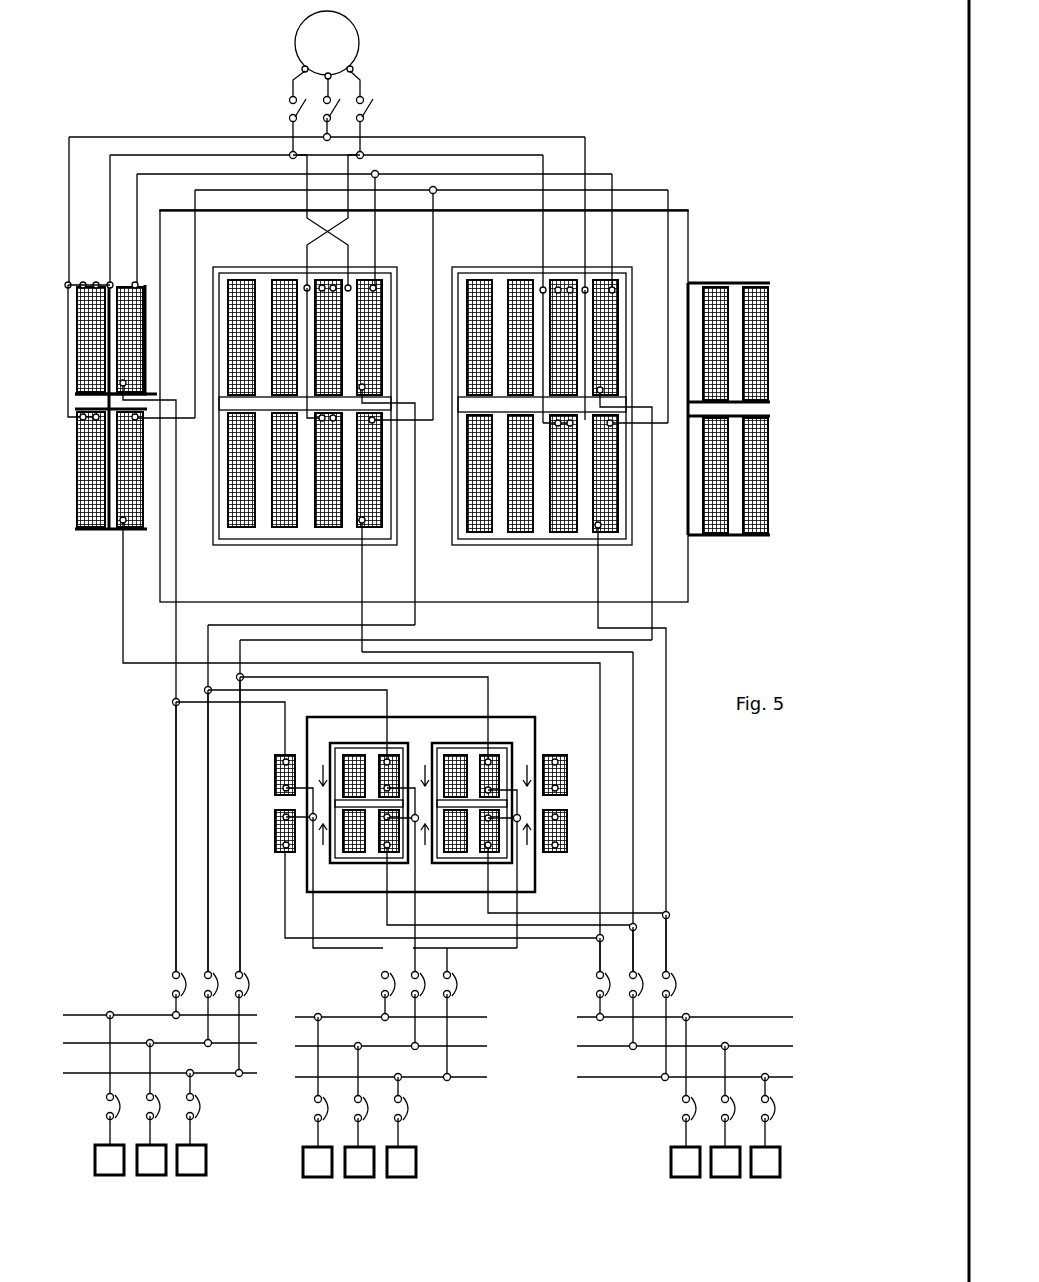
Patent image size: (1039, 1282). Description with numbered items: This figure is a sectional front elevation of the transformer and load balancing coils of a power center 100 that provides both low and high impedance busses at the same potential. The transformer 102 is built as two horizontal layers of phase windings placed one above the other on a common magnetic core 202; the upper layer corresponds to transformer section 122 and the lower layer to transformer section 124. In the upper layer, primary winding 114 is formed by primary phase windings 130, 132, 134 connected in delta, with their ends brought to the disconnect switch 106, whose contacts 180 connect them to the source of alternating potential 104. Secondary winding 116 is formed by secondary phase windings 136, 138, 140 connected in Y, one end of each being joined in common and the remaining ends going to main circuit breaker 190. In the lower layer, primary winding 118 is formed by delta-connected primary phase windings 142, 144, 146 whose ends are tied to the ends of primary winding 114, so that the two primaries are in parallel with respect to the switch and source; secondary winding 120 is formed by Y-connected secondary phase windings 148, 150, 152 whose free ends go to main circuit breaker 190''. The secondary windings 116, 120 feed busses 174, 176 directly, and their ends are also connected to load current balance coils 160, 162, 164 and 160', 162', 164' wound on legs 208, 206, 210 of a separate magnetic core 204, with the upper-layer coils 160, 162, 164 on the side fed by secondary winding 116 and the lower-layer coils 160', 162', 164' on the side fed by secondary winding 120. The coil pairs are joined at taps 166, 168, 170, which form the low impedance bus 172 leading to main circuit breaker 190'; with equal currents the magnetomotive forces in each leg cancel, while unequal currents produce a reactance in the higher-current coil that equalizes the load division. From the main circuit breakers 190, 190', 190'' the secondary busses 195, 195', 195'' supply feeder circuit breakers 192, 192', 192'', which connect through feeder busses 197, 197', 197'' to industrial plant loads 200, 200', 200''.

The power center 100 is at (532, 91).
The transformer 102 is at (788, 421).
The source of alternating potential 104 is at (360, 44).
The disconnect switch 106 is at (377, 110).
The primary winding 114 is at (80, 238).
The secondary winding 116 is at (128, 238).
The primary winding 118 is at (78, 593).
The secondary winding 120 is at (125, 593).
The transformer section 122 is at (776, 356).
The transformer section 124 is at (776, 483).
The primary phase winding 130 is at (88, 283).
The primary phase winding 132 is at (320, 280).
The primary phase winding 134 is at (560, 282).
The secondary phase winding 136 is at (133, 283).
The secondary phase winding 138 is at (373, 282).
The secondary phase winding 140 is at (613, 283).
The primary phase winding 142 is at (91, 532).
The primary phase winding 144 is at (325, 530).
The primary phase winding 146 is at (566, 535).
The secondary phase winding 148 is at (130, 532).
The secondary phase winding 150 is at (378, 530).
The secondary phase winding 152 is at (610, 535).
The load balance coil 160 is at (421, 759).
The load balance coil 160' is at (413, 848).
The load balance coil 162 is at (270, 758).
The load balance coil 162' is at (268, 848).
The load balance coil 164 is at (561, 758).
The load balance coil 164' is at (569, 848).
The tap 166 is at (417, 824).
The tap 168 is at (311, 815).
The tap 170 is at (520, 815).
The low impedance bus 172 is at (415, 896).
The bus 174 is at (238, 893).
The bus 176 is at (600, 898).
The contacts 180 is at (288, 110).
The main circuit breaker 190 is at (235, 985).
The main circuit breaker 190' is at (447, 985).
The main circuit breaker 190'' is at (666, 985).
The feeder circuit breakers 192 is at (177, 1106).
The feeder circuit breakers 192' is at (389, 1107).
The feeder circuit breakers 192'' is at (704, 1109).
The bus 195 is at (178, 1044).
The bus 195' is at (411, 1047).
The bus 195'' is at (664, 1047).
The feeder bus 197 is at (150, 1130).
The feeder bus 197' is at (358, 1132).
The feeder bus 197'' is at (724, 1132).
The industrial plant loads 200 is at (150, 1179).
The industrial plant loads 200' is at (359, 1181).
The industrial plant loads 200'' is at (725, 1182).
The magnetic core 202 is at (683, 210).
The magnetic core 204 is at (532, 718).
The leg 206 is at (318, 757).
The leg 208 is at (409, 757).
The leg 210 is at (510, 757).